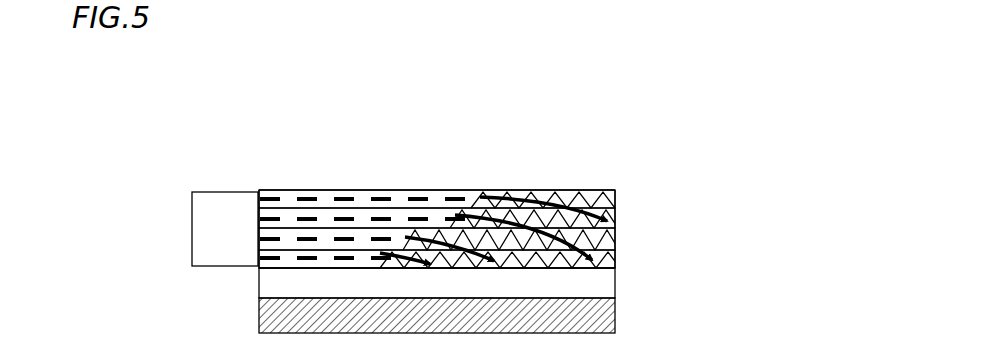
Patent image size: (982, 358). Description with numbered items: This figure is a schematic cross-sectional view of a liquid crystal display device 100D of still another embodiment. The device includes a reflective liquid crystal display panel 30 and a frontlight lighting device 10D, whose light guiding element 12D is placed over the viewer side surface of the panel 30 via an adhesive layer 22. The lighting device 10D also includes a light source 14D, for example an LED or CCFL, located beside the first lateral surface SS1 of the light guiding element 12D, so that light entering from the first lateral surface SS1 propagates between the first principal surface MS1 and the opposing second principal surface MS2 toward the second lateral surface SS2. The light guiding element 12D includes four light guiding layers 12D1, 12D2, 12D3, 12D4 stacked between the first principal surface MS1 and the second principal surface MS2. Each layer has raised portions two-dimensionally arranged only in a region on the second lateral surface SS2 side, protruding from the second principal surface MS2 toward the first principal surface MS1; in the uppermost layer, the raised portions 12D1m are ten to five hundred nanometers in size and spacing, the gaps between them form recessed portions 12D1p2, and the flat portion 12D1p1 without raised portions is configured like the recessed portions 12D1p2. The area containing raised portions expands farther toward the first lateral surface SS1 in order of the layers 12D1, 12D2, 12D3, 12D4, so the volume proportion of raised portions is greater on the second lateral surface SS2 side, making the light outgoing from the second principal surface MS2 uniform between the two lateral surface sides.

The liquid crystal display device 100D is at (686, 120).
The lighting device 10D is at (790, 172).
The light guiding element 12D is at (728, 173).
The light guiding layer 12D1 is at (615, 193).
The light guiding layer 12D2 is at (615, 212).
The light guiding layer 12D3 is at (615, 230).
The light guiding layer 12D4 is at (615, 252).
The flat portion 12D1p1 is at (432, 190).
The raised portions 12D1m is at (513, 190).
The recessed portions 12D1p2 is at (592, 190).
The light source 14D is at (237, 200).
The first principal surface MS1 is at (312, 190).
The second principal surface MS2 is at (265, 270).
The first lateral surface SS1 is at (258, 218).
The second lateral surface SS2 is at (616, 190).
The adhesive layer 22 is at (605, 285).
The reflective liquid crystal display panel 30 is at (618, 312).